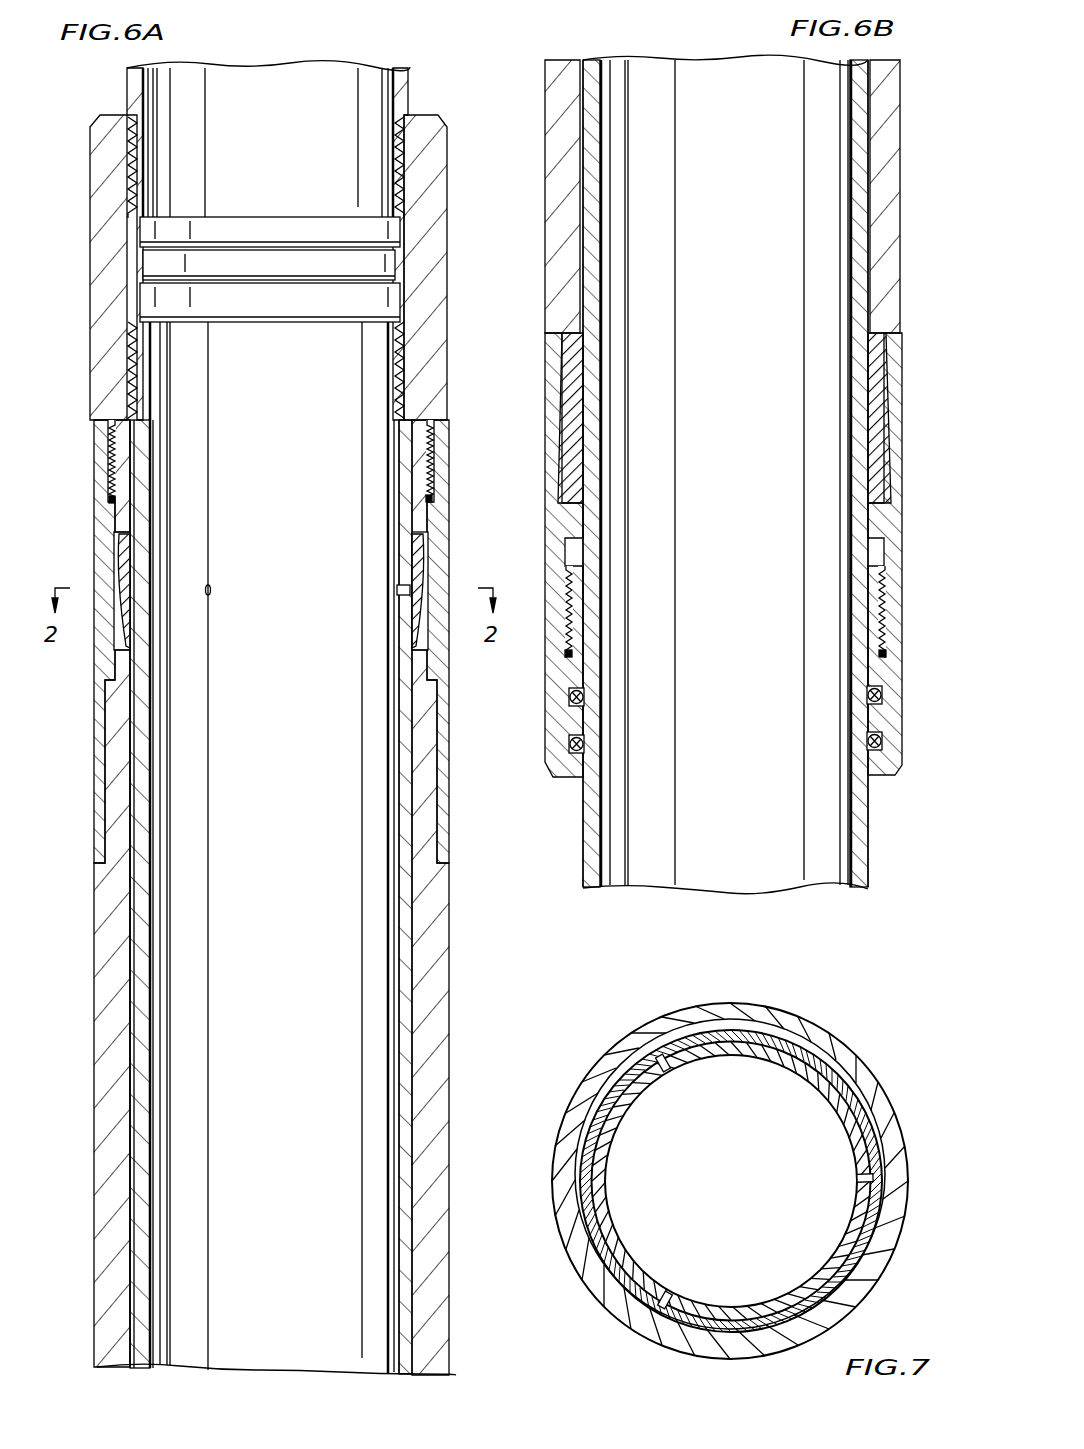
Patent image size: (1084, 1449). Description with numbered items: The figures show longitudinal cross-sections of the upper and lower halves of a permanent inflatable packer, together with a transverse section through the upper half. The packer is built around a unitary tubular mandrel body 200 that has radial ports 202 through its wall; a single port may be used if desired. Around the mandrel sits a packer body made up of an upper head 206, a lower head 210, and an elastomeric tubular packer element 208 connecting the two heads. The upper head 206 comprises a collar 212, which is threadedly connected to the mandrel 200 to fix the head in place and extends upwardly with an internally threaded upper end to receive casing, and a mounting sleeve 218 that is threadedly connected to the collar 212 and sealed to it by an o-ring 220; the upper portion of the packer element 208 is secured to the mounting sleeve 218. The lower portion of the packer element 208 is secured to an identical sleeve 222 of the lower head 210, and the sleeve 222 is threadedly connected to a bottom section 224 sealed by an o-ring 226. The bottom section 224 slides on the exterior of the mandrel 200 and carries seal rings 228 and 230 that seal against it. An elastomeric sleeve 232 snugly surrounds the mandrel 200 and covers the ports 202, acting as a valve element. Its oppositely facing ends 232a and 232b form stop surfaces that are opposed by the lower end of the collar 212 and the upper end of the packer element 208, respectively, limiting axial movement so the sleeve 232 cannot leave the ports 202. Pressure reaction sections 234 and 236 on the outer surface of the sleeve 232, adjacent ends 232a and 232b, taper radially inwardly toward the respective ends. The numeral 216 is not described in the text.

In FIG. 6A, the tubular mandrel body 200 is at (405, 1002).
In FIG. 6B, the tubular mandrel body 200 is at (595, 238).
In FIG. 7, the tubular mandrel body 200 is at (817, 1073).
In FIG. 6A, the radial ports 202 is at (396, 590).
In FIG. 7, the radial ports 202 is at (667, 1070).
In FIG. 6A, the upper head 206 is at (78, 416).
In FIG. 6A, the tubular packer element 208 is at (90, 1020).
In FIG. 6B, the lower head 210 is at (910, 575).
In FIG. 6A, the collar 212 is at (443, 203).
In FIG. 6A, the upper tubular member 216 is at (405, 82).
In FIG. 6A, the mounting sleeve 218 is at (100, 796).
In FIG. 7, the mounting sleeve 218 is at (797, 1023).
In FIG. 6A, the o-ring 220 is at (430, 497).
In FIG. 6B, the sleeve 222 is at (550, 393).
In FIG. 6B, the bottom section 224 is at (896, 718).
In FIG. 6B, the o-ring 226 is at (880, 653).
In FIG. 6B, the seal ring 228 is at (552, 702).
In FIG. 6B, the seal ring 230 is at (558, 752).
In FIG. 6A, the elastomeric sleeve 232 is at (132, 580).
In FIG. 7, the elastomeric sleeve 232 is at (583, 1178).
In FIG. 6A, the end of sleeve 232a is at (126, 535).
In FIG. 6A, the end of sleeve 232b is at (128, 650).
In FIG. 6A, the pressure reaction section 234 is at (425, 551).
In FIG. 6A, the pressure reaction section 236 is at (421, 632).